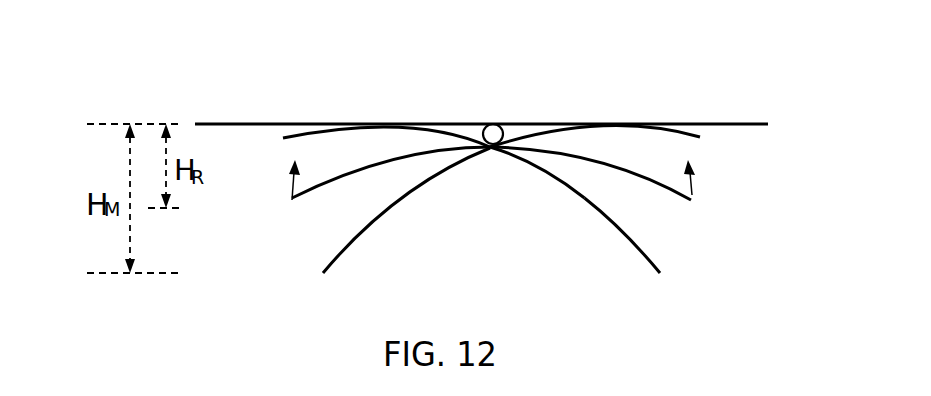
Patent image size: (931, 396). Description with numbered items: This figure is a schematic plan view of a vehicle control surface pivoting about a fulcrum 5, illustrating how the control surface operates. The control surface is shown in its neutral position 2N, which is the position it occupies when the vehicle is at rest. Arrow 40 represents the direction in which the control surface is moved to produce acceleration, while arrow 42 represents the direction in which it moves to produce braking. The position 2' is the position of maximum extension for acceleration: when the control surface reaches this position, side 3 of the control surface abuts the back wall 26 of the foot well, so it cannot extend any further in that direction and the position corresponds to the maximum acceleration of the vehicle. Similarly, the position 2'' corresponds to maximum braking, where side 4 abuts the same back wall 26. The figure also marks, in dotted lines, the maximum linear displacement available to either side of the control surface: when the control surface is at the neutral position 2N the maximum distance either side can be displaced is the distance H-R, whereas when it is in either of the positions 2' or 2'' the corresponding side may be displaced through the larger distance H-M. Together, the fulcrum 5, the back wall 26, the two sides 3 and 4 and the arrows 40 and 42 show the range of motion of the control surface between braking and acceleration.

The back wall 26 is at (745, 122).
The fulcrum 5 is at (494, 126).
The position of maximum extension for acceleration 2' is at (491, 104).
The neutral position 2N is at (632, 173).
The position of maximum braking 2'' is at (544, 202).
The side of the control surface 3 is at (648, 262).
The side of the control surface 4 is at (333, 265).
The arrow 42 is at (292, 188).
The arrow 40 is at (697, 183).